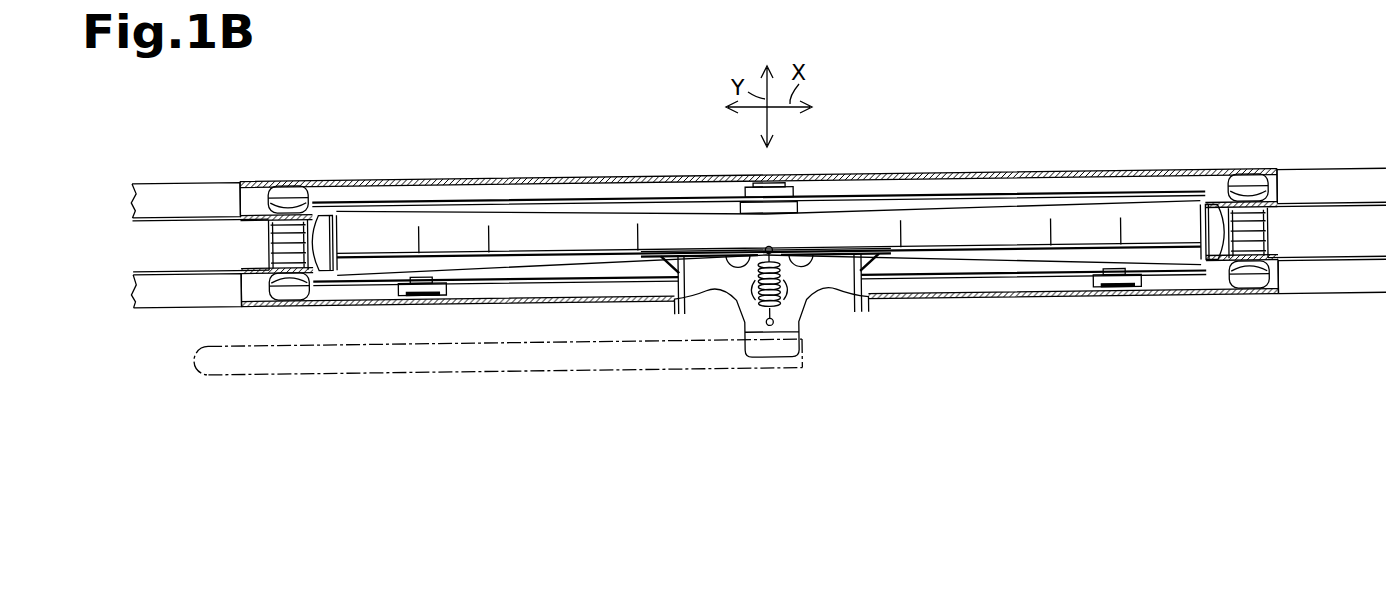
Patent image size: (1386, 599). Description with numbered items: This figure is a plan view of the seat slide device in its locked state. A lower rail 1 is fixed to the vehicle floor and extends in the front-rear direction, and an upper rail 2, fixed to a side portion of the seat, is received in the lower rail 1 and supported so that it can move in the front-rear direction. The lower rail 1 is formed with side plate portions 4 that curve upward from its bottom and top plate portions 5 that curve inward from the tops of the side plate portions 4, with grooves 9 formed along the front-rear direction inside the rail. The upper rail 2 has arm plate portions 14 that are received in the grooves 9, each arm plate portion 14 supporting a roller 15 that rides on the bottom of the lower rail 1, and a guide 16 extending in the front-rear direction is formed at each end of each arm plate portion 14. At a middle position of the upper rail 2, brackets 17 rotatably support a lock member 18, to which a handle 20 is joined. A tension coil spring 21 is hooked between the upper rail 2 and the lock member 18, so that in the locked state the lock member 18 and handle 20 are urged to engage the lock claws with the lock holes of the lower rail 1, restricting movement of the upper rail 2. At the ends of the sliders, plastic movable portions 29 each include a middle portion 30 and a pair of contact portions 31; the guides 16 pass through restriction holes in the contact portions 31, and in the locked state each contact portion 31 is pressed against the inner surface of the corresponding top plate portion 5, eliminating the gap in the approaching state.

The lower rail 1 is at (1308, 169).
The upper rail 2 is at (944, 238).
The side plate portion 4 is at (720, 178).
The top plate portion 5 is at (170, 192).
The groove 9 is at (690, 180).
The arm plate portion 14 is at (507, 203).
The roller 15 is at (808, 184).
The guide 16 is at (327, 202).
The bracket 17 is at (676, 310).
The lock member 18 is at (817, 288).
The handle 20 is at (438, 373).
The tension coil spring 21 is at (742, 312).
The movable portion 29 is at (268, 253).
The middle portion 30 is at (333, 242).
The contact portion 31 is at (287, 197).